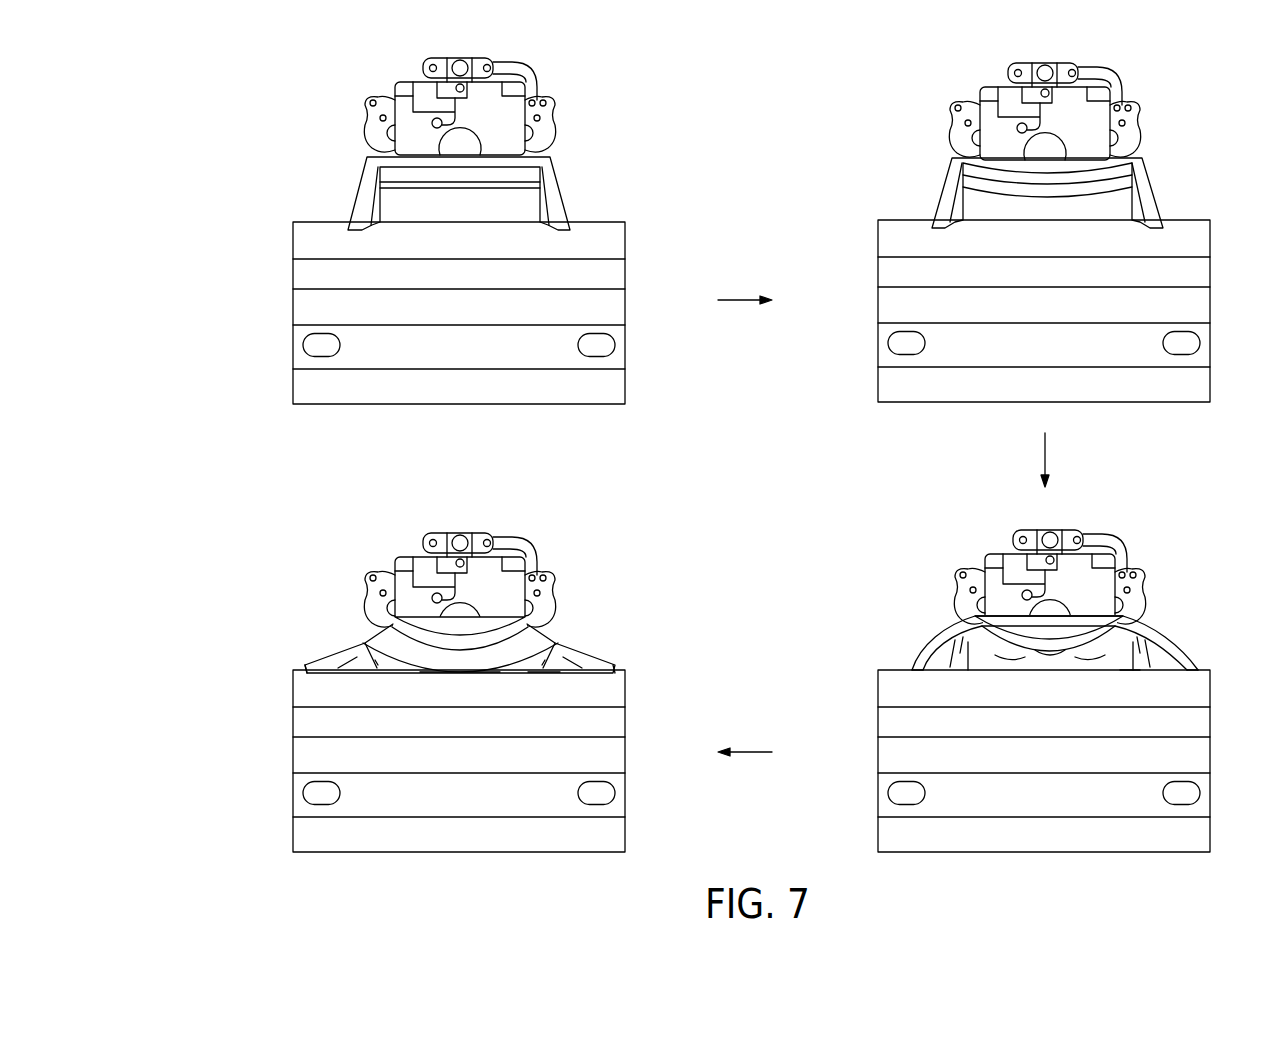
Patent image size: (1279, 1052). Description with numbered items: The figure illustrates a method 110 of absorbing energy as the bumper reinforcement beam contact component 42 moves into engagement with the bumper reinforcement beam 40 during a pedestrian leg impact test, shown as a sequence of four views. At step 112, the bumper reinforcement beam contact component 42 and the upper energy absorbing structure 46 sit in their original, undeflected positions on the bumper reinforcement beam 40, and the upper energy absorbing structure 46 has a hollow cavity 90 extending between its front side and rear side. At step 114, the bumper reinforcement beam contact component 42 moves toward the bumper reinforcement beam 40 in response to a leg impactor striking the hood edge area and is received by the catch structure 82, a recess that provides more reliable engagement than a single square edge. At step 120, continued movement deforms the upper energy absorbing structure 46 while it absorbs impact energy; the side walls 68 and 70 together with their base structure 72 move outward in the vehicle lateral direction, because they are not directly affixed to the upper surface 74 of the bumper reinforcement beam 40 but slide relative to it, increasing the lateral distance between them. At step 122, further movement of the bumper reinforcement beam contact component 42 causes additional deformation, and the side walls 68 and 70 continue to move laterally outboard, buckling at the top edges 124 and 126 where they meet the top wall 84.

The bumper reinforcement beam 40 is at (957, 378).
The bumper reinforcement beam contact component 42 is at (605, 130).
The upper energy absorbing structure 46 is at (585, 205).
The side wall 68 is at (605, 655).
The side wall 70 is at (307, 667).
The base structure 72 is at (292, 675).
The upper surface 74 is at (548, 673).
The catch structure 82 is at (1032, 188).
The top wall 84 is at (442, 673).
The hollow cavity 90 is at (433, 200).
The method 110 is at (200, 447).
The step 112 is at (298, 175).
The step 114 is at (855, 162).
The step 120 is at (898, 577).
The step 122 is at (300, 585).
The top edge 124 is at (555, 637).
The top edge 126 is at (358, 645).